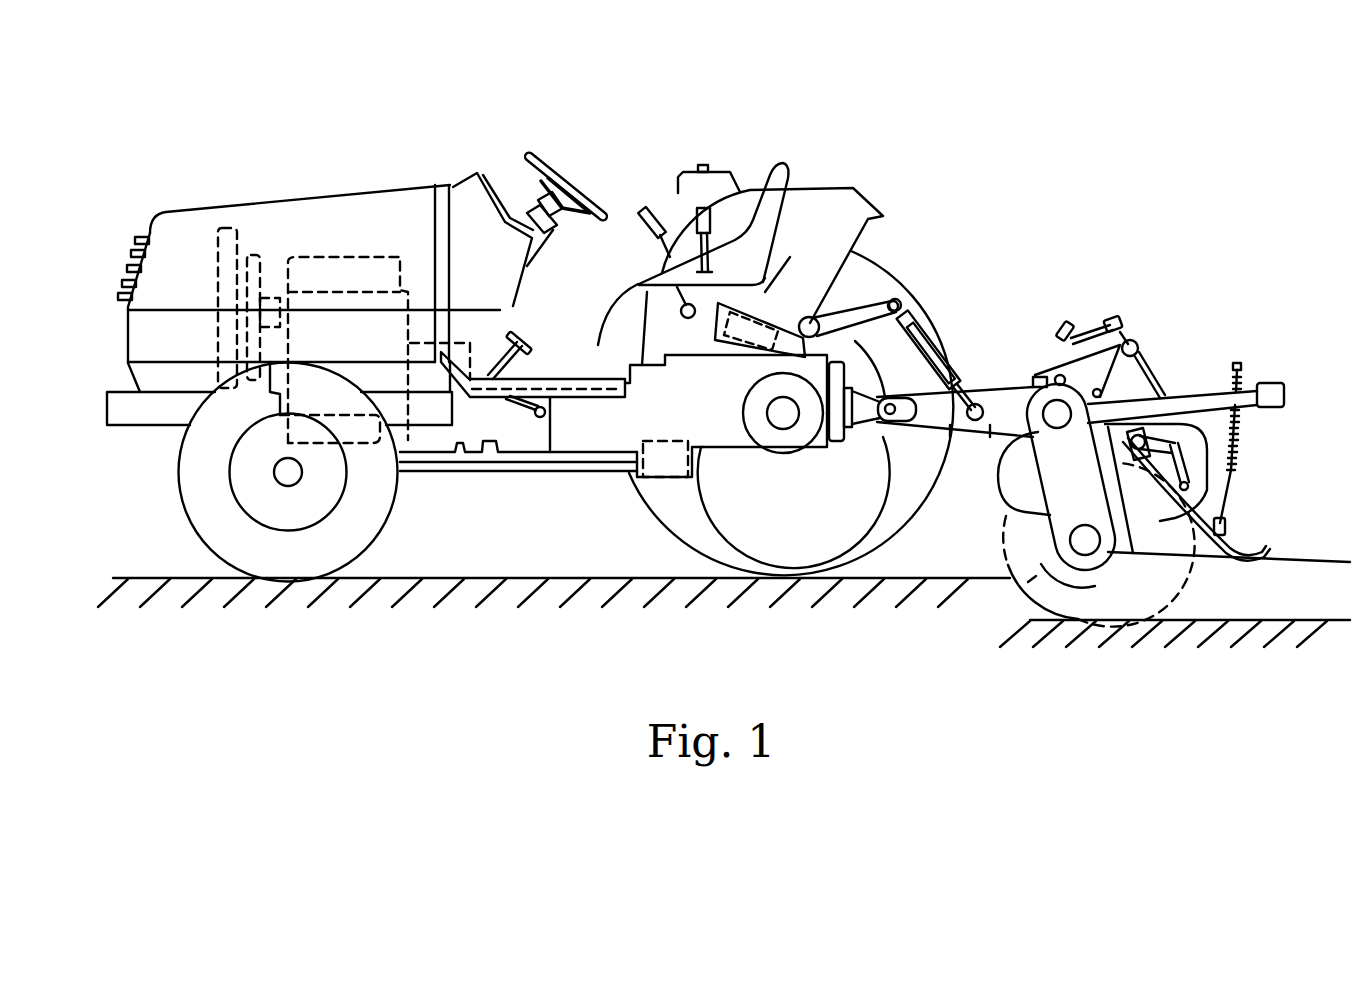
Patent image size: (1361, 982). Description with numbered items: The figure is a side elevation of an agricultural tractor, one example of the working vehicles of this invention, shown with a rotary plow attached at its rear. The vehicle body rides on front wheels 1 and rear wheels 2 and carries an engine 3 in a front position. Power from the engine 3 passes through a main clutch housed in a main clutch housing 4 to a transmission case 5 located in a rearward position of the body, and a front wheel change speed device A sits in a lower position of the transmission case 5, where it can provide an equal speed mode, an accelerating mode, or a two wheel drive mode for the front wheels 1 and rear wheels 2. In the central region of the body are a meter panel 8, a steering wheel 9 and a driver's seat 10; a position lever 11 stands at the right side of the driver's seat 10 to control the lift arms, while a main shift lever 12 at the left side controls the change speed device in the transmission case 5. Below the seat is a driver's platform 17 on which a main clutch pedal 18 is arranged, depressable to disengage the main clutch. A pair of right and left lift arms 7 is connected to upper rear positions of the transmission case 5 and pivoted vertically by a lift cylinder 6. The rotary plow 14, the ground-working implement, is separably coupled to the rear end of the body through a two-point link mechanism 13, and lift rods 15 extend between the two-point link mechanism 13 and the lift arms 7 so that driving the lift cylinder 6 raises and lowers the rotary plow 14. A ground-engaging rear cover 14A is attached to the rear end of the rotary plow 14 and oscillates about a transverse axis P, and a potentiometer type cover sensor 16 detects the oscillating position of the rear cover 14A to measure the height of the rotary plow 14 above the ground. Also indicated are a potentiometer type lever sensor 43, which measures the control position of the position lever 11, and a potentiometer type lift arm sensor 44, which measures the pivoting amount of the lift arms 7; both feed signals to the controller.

The front wheels 1 is at (194, 517).
The rear wheels 2 is at (643, 503).
The engine 3 is at (382, 257).
The main clutch housing 4 is at (453, 458).
The transmission case 5 is at (733, 437).
The lift cylinder 6 is at (737, 355).
The lift arms 7 is at (889, 277).
The meter panel 8 is at (498, 187).
The steering wheel 9 is at (560, 173).
The driver's seat 10 is at (775, 170).
The position lever 11 is at (650, 207).
The main shift lever 12 is at (707, 175).
The two-point link mechanism 13 is at (993, 428).
The rotary plow 14 is at (1087, 318).
The rear cover 14A is at (1240, 547).
The lift rods 15 is at (960, 378).
The cover sensor 16 is at (1153, 393).
The driver's platform 17 is at (568, 377).
The main clutch pedal 18 is at (543, 308).
The lever sensor 43 is at (618, 296).
The lift arm sensor 44 is at (810, 318).
The front wheel change speed device A is at (672, 478).
The axis P is at (1125, 488).